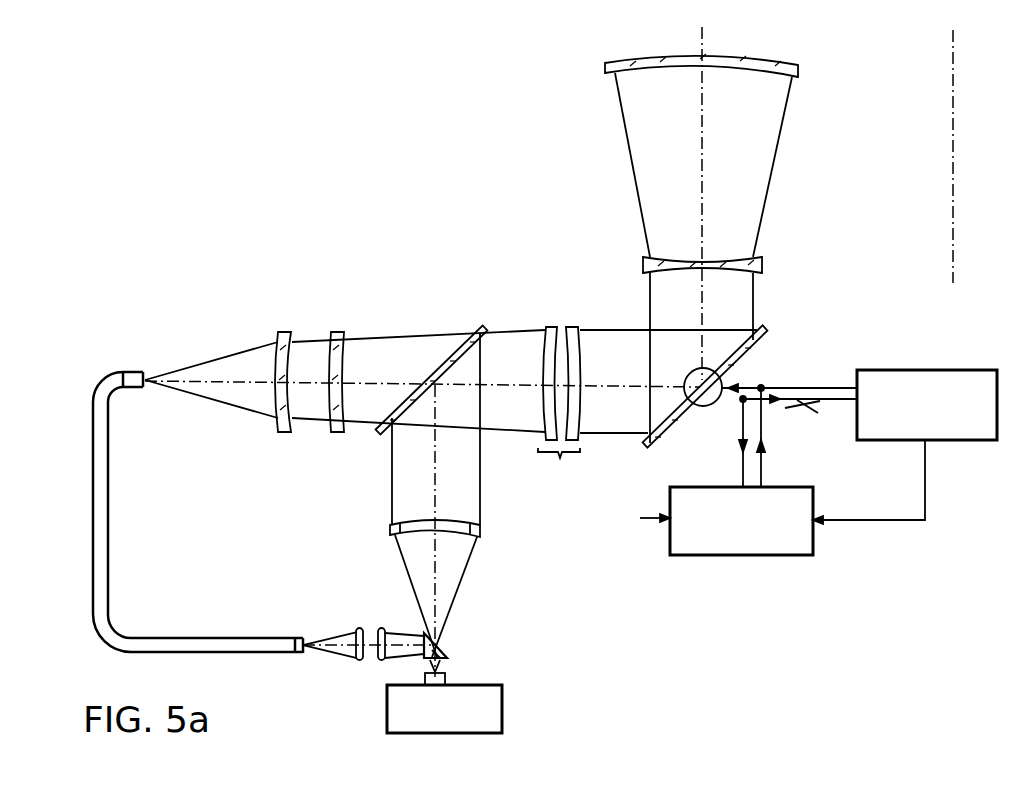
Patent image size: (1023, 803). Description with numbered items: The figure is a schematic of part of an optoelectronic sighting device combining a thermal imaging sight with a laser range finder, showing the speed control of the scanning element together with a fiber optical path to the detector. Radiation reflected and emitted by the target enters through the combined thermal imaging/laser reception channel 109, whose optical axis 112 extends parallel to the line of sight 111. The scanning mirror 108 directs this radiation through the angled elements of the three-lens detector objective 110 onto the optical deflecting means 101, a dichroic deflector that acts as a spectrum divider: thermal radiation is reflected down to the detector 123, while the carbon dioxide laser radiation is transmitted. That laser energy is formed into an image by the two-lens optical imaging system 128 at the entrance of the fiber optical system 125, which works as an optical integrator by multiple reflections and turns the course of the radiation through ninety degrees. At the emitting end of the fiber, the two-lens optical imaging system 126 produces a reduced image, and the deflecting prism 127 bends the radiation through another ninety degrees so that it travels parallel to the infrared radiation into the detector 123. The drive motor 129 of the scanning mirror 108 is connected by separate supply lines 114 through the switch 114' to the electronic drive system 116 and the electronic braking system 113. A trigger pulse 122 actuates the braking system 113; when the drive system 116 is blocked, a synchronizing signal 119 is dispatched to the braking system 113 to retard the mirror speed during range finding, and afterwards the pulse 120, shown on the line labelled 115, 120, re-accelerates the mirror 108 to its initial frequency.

The optical deflecting means 101 is at (476, 328).
The scanning mirror 108 is at (679, 436).
The combined thermal imaging/laser reception channel 109 is at (810, 70).
The three-lens detector objective 110 is at (485, 437).
The line of sight 111 is at (703, 37).
The optical axis 112 is at (953, 110).
The electronic braking system 113 is at (752, 555).
The supply lines 114 is at (798, 362).
The switch 114' is at (796, 367).
The braking signal line 115 is at (762, 463).
The pulse 120 is at (801, 443).
The electronic drive system 116 is at (905, 372).
The synchronizing signal 119 is at (837, 520).
The trigger pulse 122 is at (648, 520).
The detector 123 is at (507, 713).
The fiber optical system 125 is at (125, 377).
The optical imaging system 126 is at (381, 662).
The deflecting prism 127 is at (447, 647).
The two-lens optical imaging system 128 is at (337, 332).
The drive motor 129 is at (649, 312).